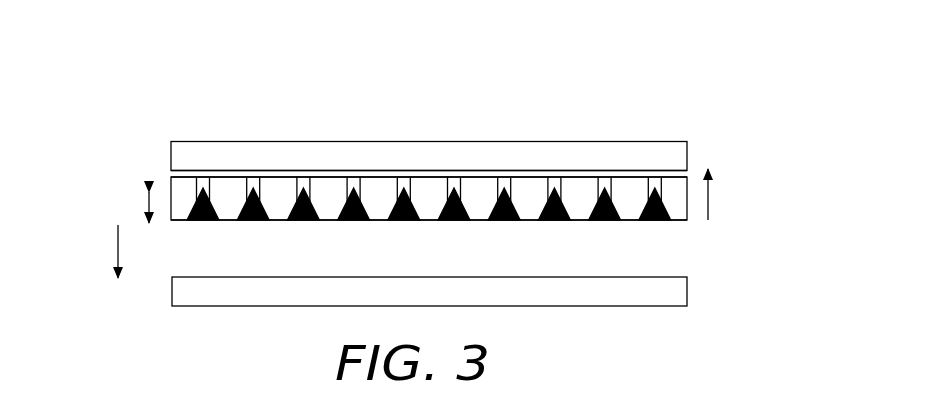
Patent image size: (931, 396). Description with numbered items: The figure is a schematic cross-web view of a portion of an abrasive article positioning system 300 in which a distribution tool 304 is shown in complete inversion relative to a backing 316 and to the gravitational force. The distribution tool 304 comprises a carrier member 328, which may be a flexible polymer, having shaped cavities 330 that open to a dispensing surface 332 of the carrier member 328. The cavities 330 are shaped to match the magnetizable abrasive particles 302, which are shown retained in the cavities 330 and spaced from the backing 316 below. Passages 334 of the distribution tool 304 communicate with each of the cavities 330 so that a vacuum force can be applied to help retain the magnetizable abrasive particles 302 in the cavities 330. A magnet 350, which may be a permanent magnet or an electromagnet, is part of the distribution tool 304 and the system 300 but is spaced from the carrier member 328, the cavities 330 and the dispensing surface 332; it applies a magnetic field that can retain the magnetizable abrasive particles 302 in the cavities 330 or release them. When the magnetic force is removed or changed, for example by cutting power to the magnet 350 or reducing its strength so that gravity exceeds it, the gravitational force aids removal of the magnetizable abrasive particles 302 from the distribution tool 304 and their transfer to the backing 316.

The abrasive article positioning system 300 is at (148, 66).
The distribution tool 304 is at (686, 120).
The magnet 350 is at (529, 155).
The passages 334 is at (186, 174).
The carrier member 328 is at (281, 200).
The dispensing surface 332 is at (378, 220).
The shaped cavities 330 is at (503, 220).
The magnetizable abrasive particles 302 is at (660, 222).
The backing 316 is at (670, 290).